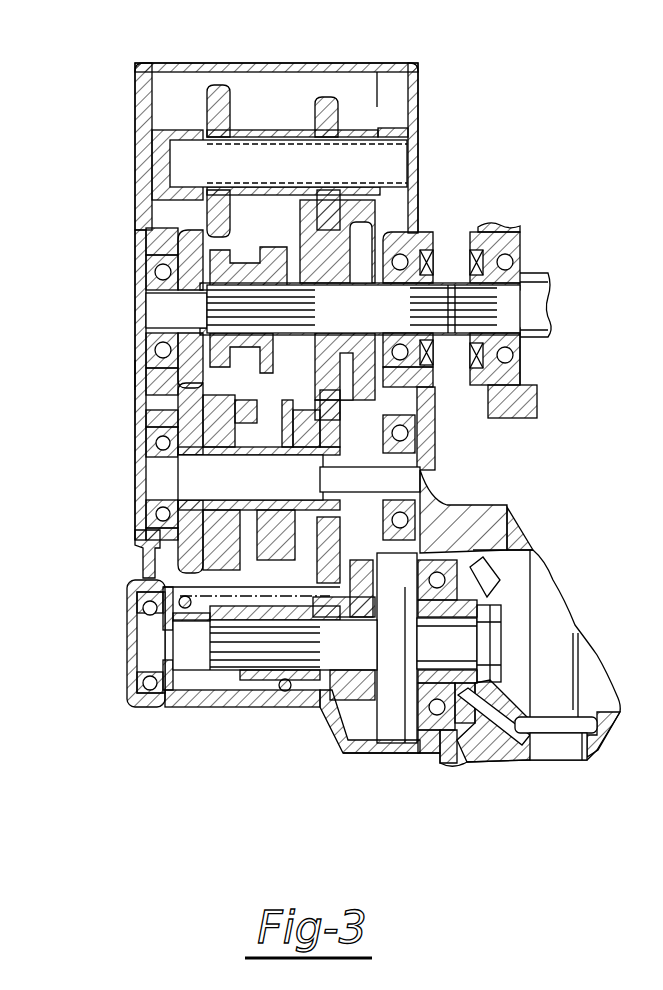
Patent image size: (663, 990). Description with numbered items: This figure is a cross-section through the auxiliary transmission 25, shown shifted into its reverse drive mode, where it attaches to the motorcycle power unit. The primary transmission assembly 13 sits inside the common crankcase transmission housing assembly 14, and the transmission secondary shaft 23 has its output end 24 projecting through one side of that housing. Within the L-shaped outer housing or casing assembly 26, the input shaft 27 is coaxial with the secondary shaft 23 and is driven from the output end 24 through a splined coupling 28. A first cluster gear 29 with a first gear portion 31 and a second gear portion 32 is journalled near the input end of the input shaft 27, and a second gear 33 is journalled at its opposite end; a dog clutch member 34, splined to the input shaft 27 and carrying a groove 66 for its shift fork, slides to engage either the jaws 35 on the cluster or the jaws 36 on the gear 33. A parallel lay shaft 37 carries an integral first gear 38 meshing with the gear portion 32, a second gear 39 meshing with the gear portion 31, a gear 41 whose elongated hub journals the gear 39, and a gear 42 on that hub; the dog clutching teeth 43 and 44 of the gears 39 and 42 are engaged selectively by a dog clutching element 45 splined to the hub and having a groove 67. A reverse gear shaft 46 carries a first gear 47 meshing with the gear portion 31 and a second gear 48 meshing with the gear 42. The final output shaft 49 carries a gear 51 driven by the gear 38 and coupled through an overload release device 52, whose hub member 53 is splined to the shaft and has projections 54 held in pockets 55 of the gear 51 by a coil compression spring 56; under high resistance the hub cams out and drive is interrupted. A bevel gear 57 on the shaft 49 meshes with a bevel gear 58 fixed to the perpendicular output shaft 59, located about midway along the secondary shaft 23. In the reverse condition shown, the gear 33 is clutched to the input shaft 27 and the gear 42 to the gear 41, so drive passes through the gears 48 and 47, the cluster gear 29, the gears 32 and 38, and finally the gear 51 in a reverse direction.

The primary transmission assembly 13 is at (552, 373).
The crankcase transmission housing assembly 14 is at (510, 420).
The transmission secondary shaft 23 is at (535, 292).
The output end 24 is at (465, 277).
The auxiliary transmission 25 is at (118, 372).
The outer housing or casing assembly 26 is at (396, 63).
The input shaft 27 is at (413, 240).
The splined coupling 28 is at (453, 285).
The first cluster gear 29 is at (367, 213).
The first gear portion 31 is at (310, 240).
The second gear portion 32 is at (357, 215).
The second gear 33 is at (155, 265).
The dog clutch member 34 is at (170, 345).
The jaws 35 is at (317, 217).
The jaws 36 is at (178, 232).
The lay shaft 37 is at (185, 480).
The first gear 38 is at (368, 437).
The second gear 39 is at (340, 537).
The gear 41 is at (195, 553).
The gear 42 is at (163, 435).
The dog clutching teeth 43 is at (380, 413).
The dog clutching teeth 44 is at (200, 415).
The dog clutching element 45 is at (165, 565).
The reverse gear shaft 46 is at (188, 155).
The first gear 47 is at (340, 115).
The second gear 48 is at (233, 100).
The final output shaft 49 is at (320, 705).
The gear 51 is at (340, 745).
The overload release device 52 is at (210, 705).
The hub member 53 is at (260, 680).
The projections 54 is at (250, 548).
The recesses or pockets 55 is at (330, 622).
The coil compression spring 56 is at (150, 700).
The bevel gear 57 is at (455, 730).
The bevel gear 58 is at (503, 740).
The output shaft 59 is at (555, 755).
The groove 66 is at (165, 357).
The groove 67 is at (150, 590).